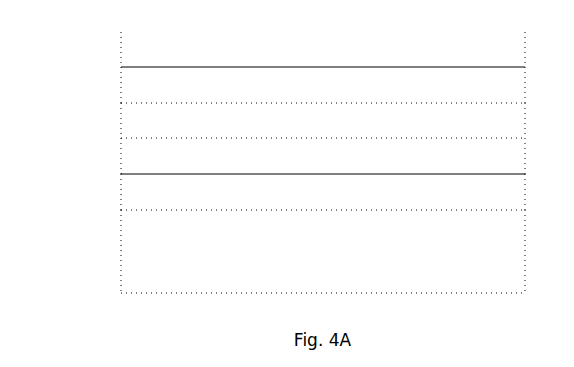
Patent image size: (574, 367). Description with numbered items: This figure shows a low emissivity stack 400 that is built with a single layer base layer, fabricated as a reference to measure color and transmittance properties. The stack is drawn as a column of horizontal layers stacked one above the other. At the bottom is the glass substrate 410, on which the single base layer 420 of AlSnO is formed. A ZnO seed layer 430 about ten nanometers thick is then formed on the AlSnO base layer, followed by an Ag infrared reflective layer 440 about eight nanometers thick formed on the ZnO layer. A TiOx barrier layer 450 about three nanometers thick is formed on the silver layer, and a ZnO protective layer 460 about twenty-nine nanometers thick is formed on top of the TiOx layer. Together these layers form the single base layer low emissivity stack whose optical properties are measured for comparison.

The layered device structure 400 is at (78, 124).
The substrate layer 410 is at (306, 262).
The second layer 420 is at (306, 204).
The third layer 430 is at (306, 168).
The fourth layer 440 is at (306, 131).
The fifth layer 450 is at (306, 96).
The top layer 460 is at (306, 60).